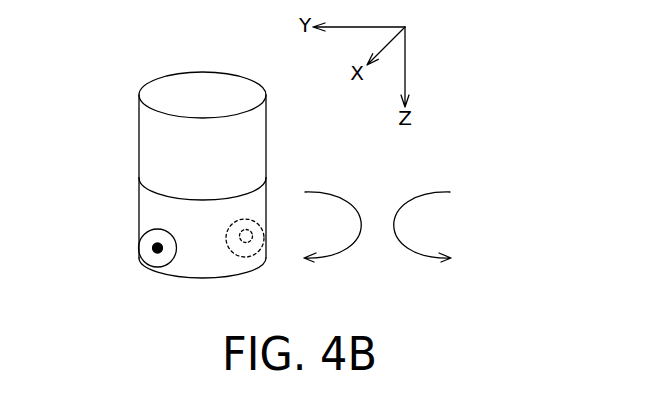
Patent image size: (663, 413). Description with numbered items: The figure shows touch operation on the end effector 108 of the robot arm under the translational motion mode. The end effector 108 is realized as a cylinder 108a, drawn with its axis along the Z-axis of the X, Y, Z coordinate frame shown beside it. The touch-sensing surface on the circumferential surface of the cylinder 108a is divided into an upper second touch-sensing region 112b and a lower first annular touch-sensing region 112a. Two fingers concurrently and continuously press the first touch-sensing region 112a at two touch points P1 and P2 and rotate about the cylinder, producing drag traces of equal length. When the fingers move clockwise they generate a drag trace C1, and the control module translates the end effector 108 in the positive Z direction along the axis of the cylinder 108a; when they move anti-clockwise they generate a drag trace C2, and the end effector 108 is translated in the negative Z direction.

The end effector 108 is at (186, 167).
The cylinder 108a is at (236, 95).
The first touch-sensing region 112a is at (128, 232).
The second touch-sensing region 112b is at (128, 142).
The touch point P1 is at (154, 253).
The touch point P2 is at (249, 243).
The drag trace C1 is at (336, 192).
The drag trace C2 is at (430, 192).